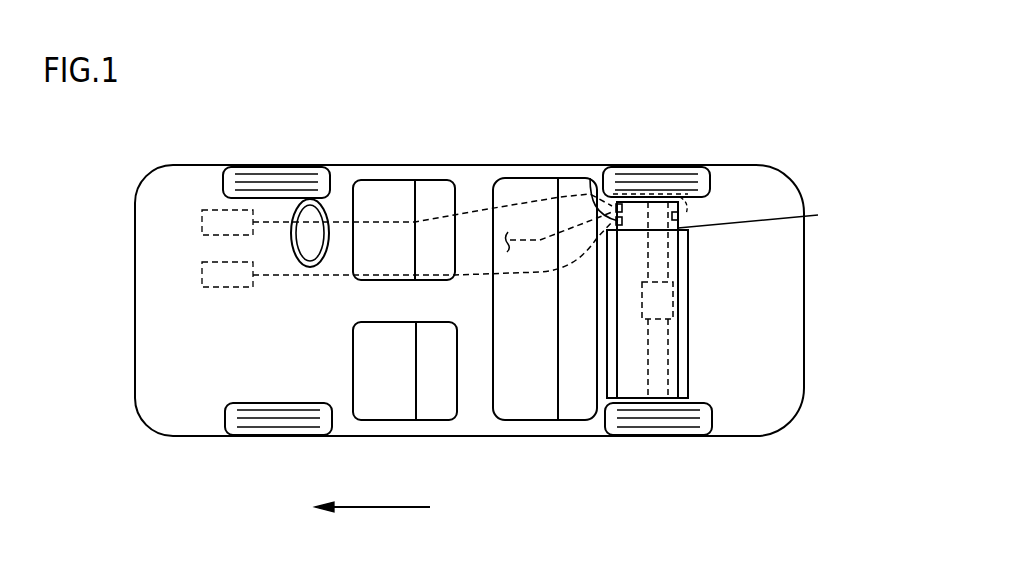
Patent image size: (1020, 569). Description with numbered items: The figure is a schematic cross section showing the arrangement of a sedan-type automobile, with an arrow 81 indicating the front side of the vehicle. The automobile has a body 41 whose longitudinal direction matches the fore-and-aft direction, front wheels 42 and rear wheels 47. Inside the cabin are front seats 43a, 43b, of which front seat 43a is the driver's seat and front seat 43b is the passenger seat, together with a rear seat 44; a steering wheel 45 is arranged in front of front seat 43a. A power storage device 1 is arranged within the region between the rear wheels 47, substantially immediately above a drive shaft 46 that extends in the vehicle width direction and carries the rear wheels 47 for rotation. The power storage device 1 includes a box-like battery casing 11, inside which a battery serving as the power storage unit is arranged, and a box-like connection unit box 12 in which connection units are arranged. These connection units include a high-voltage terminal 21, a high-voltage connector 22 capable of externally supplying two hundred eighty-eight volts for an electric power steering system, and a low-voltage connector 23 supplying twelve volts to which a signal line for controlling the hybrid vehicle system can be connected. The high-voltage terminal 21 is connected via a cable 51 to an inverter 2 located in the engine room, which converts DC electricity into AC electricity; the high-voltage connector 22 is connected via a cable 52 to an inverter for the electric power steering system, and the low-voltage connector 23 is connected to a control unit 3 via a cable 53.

The power storage device 1 is at (728, 239).
The inverter 2 is at (202, 275).
The control unit 3 is at (202, 224).
The battery casing 11 is at (637, 250).
The connection unit box 12 is at (672, 200).
The high-voltage terminal 21 is at (590, 178).
The high-voltage connector 22 is at (620, 204).
The low-voltage connector 23 is at (763, 218).
The body 41 is at (440, 165).
The front wheels 42 is at (265, 177).
The front seat 43a is at (386, 196).
The front seat 43b is at (387, 400).
The rear seat 44 is at (528, 400).
The steering wheel 45 is at (310, 200).
The drive shaft 46 is at (668, 350).
The rear wheels 47 is at (655, 422).
The cable 51 is at (543, 268).
The cable 52 is at (518, 240).
The cable 53 is at (482, 210).
The arrow 81 is at (382, 508).